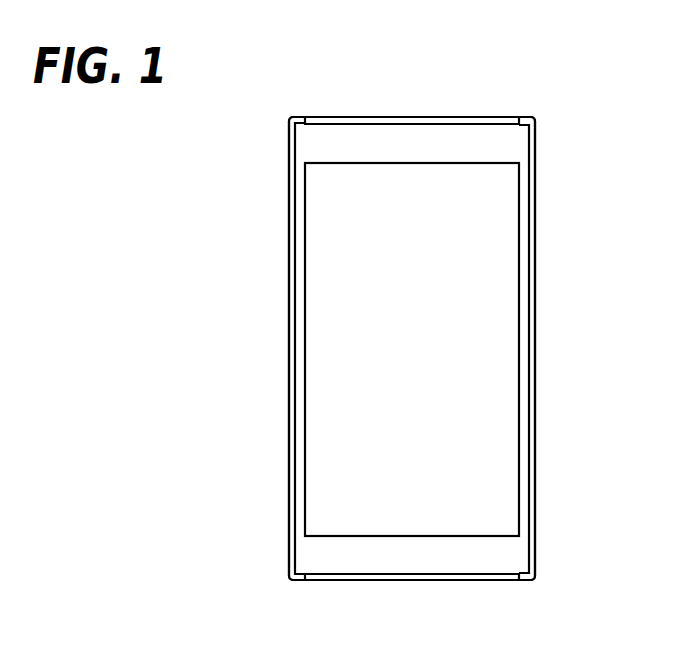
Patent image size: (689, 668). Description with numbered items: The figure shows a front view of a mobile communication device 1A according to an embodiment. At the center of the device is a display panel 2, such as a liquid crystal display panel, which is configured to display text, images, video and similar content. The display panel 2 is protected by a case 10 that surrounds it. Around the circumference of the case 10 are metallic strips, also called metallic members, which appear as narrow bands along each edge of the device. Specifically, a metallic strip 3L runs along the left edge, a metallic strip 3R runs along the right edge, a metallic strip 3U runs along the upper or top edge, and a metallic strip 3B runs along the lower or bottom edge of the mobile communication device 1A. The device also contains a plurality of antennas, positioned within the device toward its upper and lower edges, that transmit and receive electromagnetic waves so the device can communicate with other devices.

The mobile communication device 1A is at (432, 72).
The case 10 is at (512, 143).
The metallic strip 3U is at (375, 117).
The metallic strip 3L is at (288, 325).
The metallic strip 3R is at (535, 385).
The metallic strip 3B is at (366, 581).
The display panel 2 is at (495, 247).